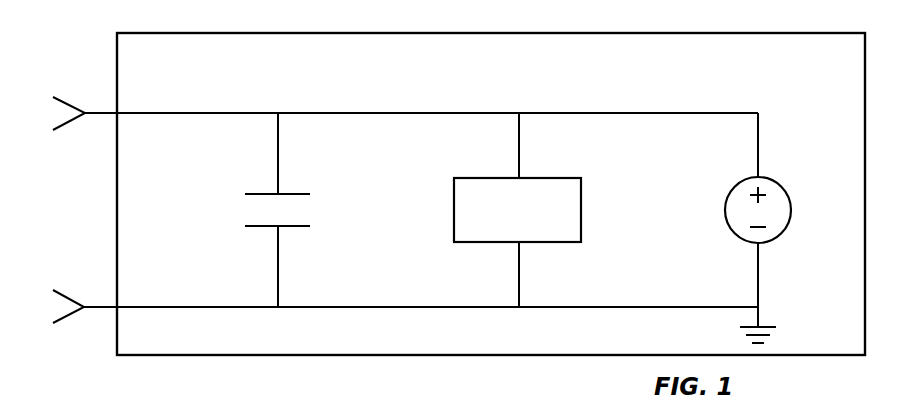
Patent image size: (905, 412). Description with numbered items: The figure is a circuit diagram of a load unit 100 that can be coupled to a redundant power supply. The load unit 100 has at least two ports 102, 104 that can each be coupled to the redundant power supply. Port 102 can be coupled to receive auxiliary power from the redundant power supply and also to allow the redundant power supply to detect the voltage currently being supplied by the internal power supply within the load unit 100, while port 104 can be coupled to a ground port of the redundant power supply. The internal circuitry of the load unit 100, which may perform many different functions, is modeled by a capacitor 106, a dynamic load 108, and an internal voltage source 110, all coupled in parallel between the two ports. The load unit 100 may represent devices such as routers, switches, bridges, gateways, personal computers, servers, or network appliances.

The load unit 100 is at (491, 194).
The port 102 is at (60, 98).
The port 104 is at (60, 292).
The capacitor 106 is at (303, 192).
The dynamic load 108 is at (517, 210).
The internal voltage source 110 is at (775, 183).